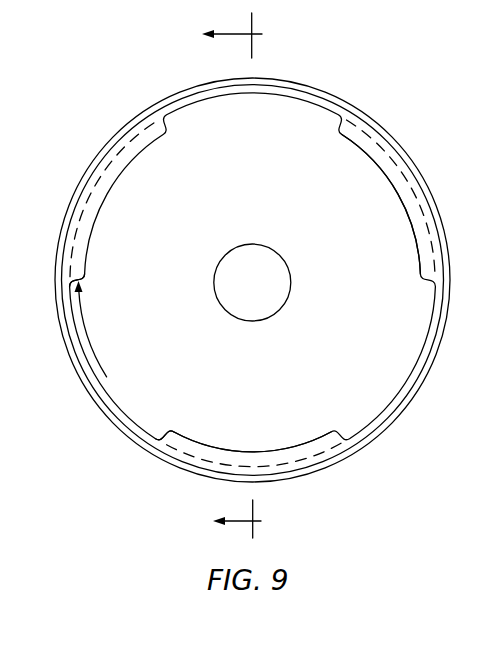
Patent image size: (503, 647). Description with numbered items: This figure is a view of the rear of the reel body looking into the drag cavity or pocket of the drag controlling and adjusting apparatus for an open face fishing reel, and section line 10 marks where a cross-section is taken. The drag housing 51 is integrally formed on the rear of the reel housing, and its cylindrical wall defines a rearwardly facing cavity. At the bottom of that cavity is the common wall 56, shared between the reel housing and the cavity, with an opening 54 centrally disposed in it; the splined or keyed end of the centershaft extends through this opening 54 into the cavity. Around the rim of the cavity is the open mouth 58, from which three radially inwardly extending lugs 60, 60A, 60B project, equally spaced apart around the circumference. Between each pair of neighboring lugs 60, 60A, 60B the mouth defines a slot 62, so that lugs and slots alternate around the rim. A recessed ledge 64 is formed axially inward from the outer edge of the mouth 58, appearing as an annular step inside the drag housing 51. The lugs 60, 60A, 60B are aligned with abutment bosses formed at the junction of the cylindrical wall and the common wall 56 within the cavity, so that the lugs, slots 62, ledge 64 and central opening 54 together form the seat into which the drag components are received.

The section line 10- 10 is at (232, 280).
The drag housing 51 is at (121, 128).
The opening 54 is at (290, 312).
The common wall 56 is at (398, 310).
The open mouth 58 is at (403, 370).
The lug 60 is at (84, 252).
The lug 60A is at (293, 458).
The lug 60B is at (400, 182).
The slot 62 is at (158, 429).
The recessed ledge 64 is at (386, 421).